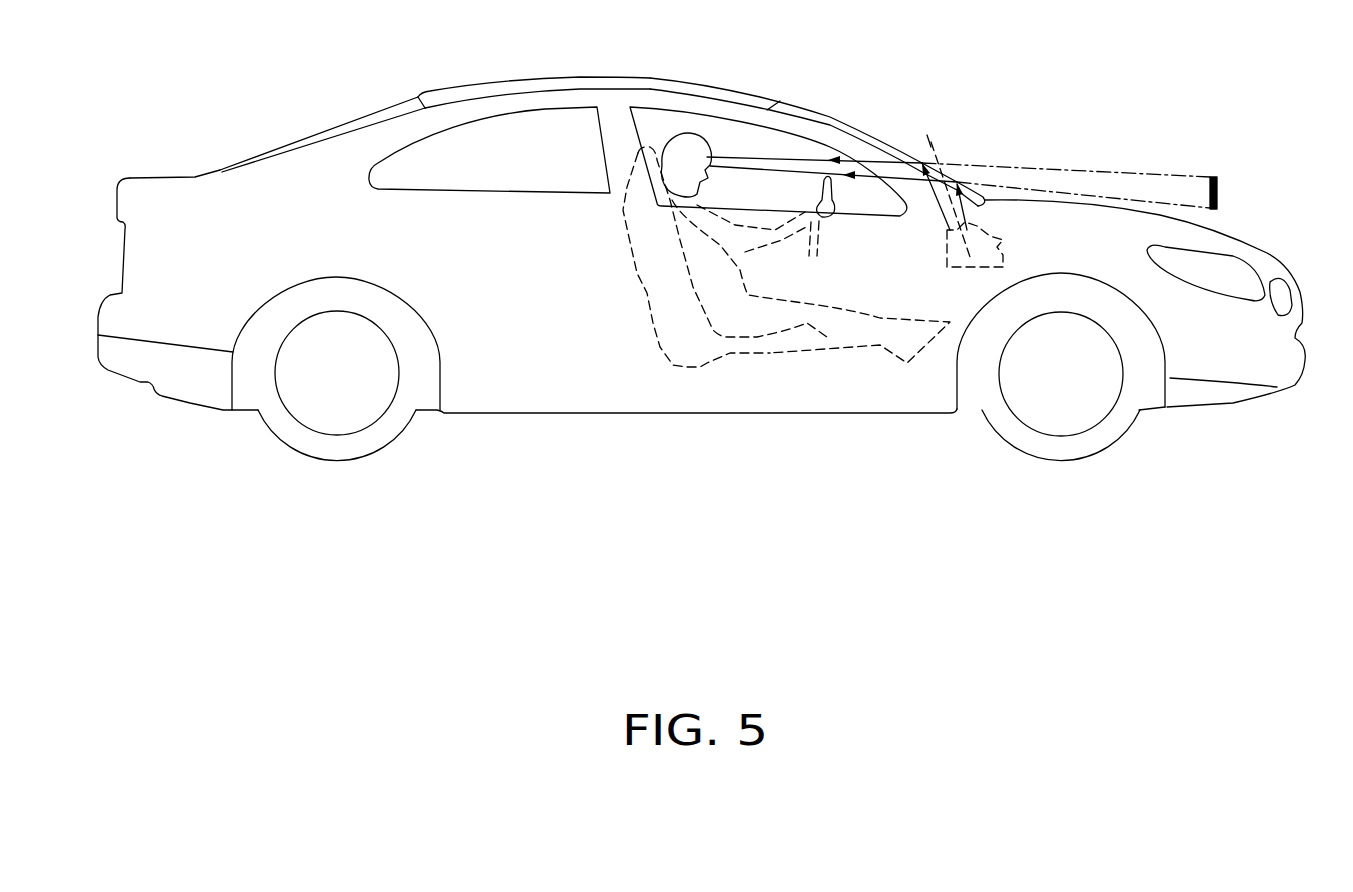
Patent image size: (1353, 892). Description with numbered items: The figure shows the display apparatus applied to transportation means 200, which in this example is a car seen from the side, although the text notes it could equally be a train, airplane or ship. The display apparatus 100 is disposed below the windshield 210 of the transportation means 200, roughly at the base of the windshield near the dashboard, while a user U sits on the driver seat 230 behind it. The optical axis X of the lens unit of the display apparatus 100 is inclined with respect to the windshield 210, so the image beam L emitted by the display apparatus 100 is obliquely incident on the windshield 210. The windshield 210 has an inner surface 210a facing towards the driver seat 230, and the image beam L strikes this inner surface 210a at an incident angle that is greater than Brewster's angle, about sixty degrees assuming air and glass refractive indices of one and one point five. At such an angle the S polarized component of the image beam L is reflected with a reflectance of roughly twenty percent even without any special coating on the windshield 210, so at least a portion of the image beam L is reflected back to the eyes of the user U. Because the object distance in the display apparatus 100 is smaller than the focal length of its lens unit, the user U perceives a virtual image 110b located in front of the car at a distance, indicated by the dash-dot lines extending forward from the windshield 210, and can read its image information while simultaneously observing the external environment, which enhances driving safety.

The display apparatus 100 is at (970, 267).
The virtual image 110b is at (1218, 192).
The transportation means 200 is at (1217, 363).
The windshield 210 is at (806, 113).
The inner surface 210a is at (820, 121).
The driver seat 230 is at (772, 345).
The user U is at (735, 317).
The image beam L is at (760, 153).
The optical axis X is at (930, 140).